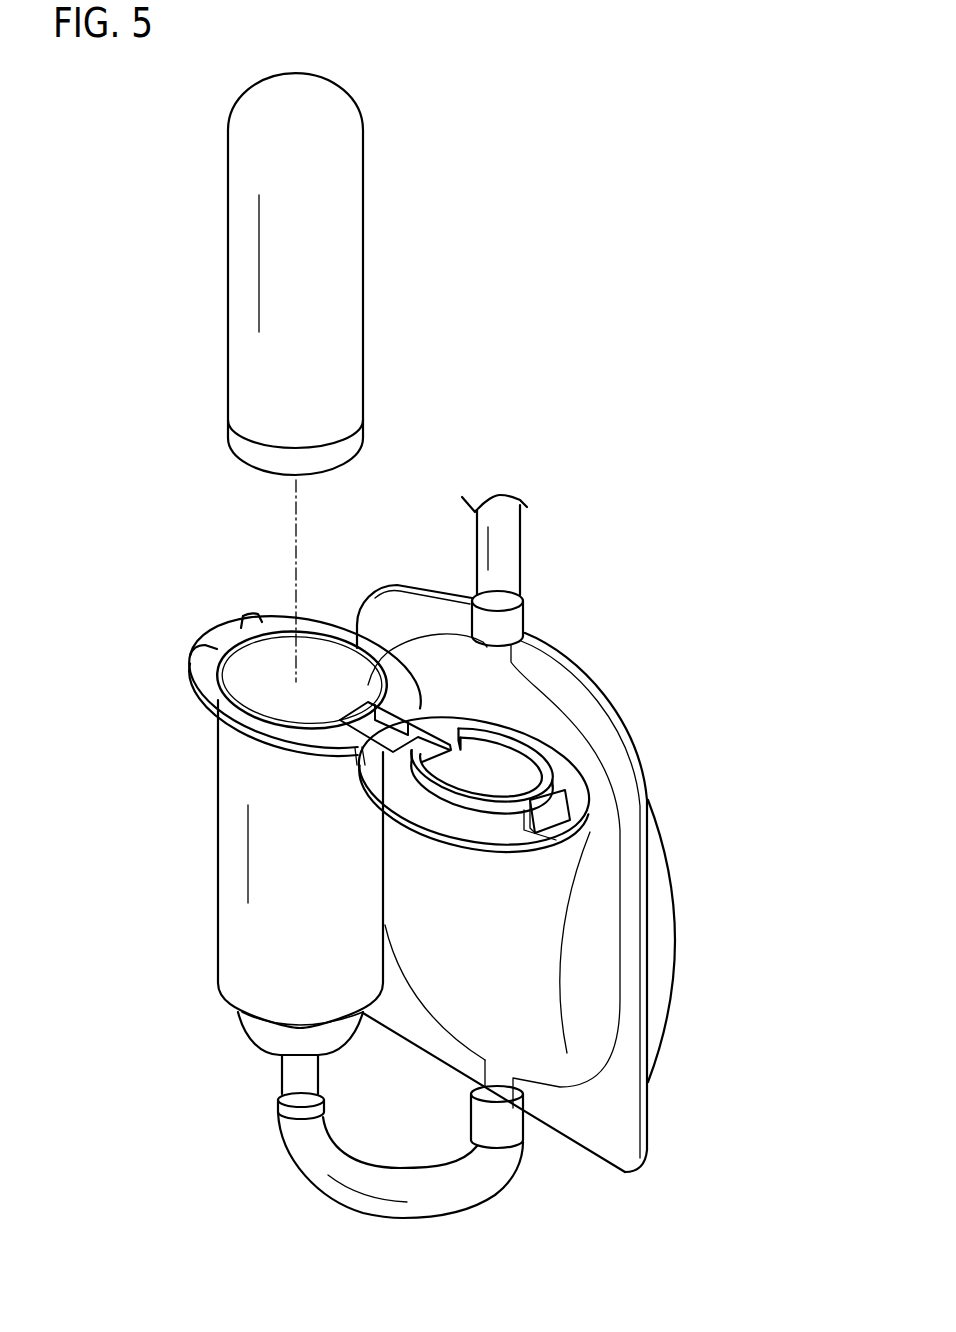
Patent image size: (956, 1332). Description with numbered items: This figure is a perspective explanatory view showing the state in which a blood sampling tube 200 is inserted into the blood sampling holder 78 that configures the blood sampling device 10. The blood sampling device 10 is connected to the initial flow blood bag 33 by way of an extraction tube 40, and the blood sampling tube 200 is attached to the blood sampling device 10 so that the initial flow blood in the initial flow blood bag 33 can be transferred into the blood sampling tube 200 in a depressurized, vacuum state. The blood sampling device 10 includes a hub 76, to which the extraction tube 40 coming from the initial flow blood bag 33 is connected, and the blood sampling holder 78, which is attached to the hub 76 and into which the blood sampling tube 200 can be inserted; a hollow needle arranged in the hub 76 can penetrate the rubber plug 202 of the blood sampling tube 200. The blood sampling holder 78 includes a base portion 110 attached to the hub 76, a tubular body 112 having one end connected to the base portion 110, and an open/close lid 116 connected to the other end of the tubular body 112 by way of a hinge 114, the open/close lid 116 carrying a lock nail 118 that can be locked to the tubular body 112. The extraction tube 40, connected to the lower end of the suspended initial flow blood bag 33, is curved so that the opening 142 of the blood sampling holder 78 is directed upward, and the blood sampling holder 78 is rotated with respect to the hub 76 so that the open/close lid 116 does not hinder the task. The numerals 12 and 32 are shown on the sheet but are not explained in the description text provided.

The blood sampling device 10 is at (198, 745).
The container assembly 12 is at (548, 105).
The tube 32 is at (508, 543).
The initial flow blood bag 33 is at (620, 762).
The extraction tube 40 is at (445, 1200).
The hub 76 is at (300, 1087).
The blood sampling holder 78 is at (218, 843).
The base portion 110 is at (262, 1028).
The tubular body 112 is at (218, 918).
The hinge 114 is at (390, 737).
The open/close lid 116 is at (563, 777).
The lock nail 118 is at (543, 820).
The opening 142 is at (245, 665).
The blood sampling tube 200 is at (350, 236).
The rubber plug 202 is at (352, 442).